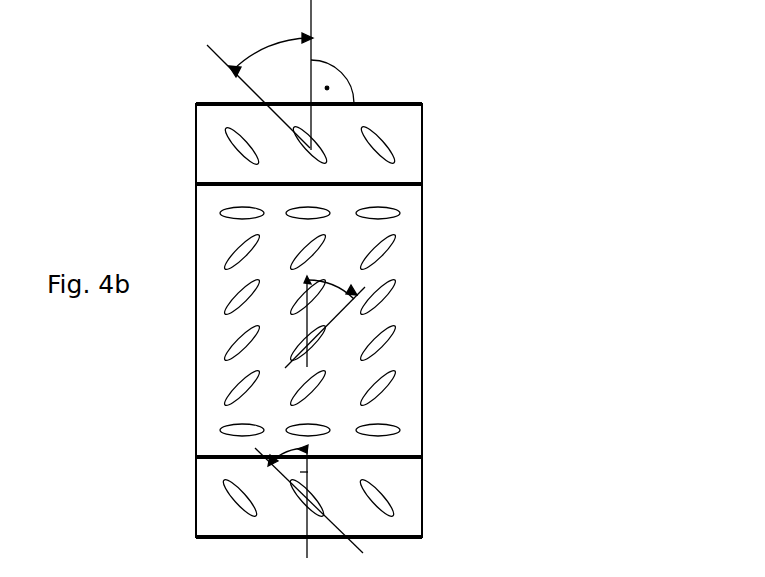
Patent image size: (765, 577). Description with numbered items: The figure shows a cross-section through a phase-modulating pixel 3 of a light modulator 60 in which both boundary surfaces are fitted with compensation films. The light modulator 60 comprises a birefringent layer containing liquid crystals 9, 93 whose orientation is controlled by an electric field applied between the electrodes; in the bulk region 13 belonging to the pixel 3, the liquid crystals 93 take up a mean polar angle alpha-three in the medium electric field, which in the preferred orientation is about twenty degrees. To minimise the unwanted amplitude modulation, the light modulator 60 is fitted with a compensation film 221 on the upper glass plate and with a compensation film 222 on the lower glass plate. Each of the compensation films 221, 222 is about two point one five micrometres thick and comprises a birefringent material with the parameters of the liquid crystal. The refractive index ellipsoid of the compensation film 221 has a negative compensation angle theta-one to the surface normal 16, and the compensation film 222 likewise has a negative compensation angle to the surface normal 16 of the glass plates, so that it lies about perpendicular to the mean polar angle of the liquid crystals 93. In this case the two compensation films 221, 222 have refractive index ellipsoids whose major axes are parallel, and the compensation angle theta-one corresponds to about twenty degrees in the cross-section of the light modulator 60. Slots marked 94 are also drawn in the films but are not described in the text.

The light modulator 60 is at (473, 103).
The pixel 3 is at (466, 268).
The bulk region 13 is at (415, 298).
The compensation film 221 is at (417, 155).
The compensation film 222 is at (208, 513).
The liquid crystals 9 is at (400, 212).
The liquid crystals 93 is at (390, 333).
The edge slots 94 is at (235, 143).
The surface normal 16 is at (314, 50).